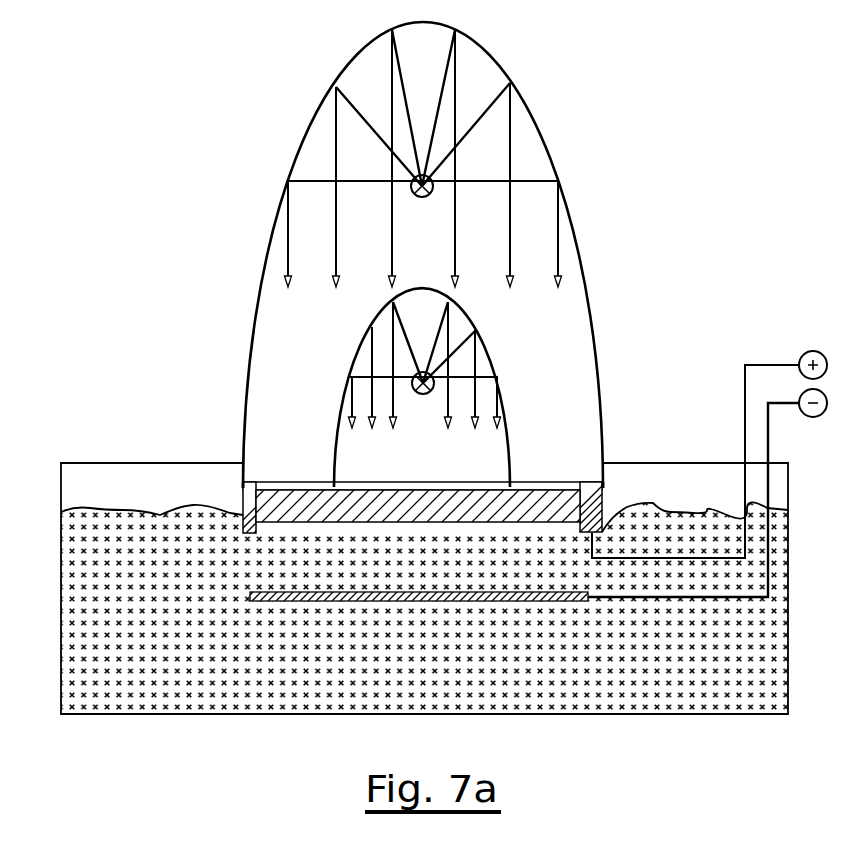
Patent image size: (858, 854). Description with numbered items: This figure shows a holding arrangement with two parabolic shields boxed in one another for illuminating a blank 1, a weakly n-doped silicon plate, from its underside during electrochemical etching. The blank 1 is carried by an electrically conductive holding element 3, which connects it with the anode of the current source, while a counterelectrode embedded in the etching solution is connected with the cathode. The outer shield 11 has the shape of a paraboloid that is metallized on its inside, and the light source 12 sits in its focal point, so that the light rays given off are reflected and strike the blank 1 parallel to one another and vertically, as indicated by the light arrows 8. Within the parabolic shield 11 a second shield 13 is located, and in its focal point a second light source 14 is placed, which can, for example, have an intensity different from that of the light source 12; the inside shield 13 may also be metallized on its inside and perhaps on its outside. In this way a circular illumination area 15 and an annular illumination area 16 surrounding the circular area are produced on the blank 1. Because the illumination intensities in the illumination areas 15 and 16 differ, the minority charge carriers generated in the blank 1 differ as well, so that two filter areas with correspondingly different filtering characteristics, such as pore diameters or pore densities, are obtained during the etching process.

The blank 1 is at (316, 524).
The holding element 3 is at (252, 530).
The light arrows 8 is at (290, 262).
The shield 11 is at (586, 270).
The light source 12 is at (411, 178).
The second shield 13 is at (510, 416).
The second light source 14 is at (411, 378).
The circular illumination area 15 is at (440, 482).
The annular illumination area 16 is at (286, 480).